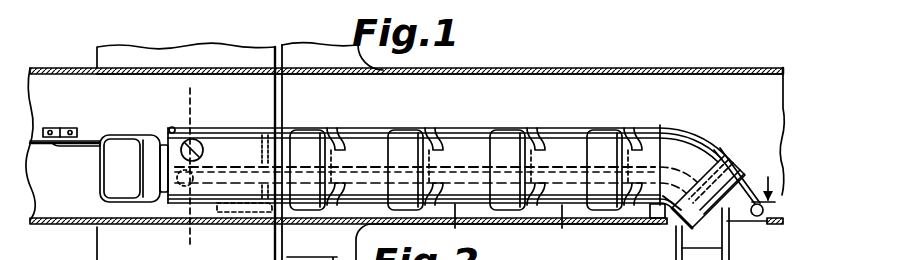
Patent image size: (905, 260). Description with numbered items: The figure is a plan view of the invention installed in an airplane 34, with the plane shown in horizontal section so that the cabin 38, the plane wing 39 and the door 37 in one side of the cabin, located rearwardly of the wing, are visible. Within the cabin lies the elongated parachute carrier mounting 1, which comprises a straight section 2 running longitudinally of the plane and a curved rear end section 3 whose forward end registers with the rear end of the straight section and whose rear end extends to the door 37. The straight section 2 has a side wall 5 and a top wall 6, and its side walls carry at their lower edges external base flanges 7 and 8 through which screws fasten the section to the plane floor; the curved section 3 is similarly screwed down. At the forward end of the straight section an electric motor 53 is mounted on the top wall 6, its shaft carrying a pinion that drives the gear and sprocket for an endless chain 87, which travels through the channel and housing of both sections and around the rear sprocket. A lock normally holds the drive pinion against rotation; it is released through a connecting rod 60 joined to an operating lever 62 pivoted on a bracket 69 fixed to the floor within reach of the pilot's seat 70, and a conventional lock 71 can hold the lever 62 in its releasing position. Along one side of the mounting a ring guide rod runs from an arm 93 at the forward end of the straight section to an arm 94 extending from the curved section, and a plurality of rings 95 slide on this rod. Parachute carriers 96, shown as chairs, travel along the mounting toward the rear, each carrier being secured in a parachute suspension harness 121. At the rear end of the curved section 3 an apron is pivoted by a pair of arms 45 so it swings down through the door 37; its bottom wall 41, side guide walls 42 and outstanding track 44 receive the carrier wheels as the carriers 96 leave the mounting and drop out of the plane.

The parachute carrier mounting 1 is at (360, 136).
The straight section 2 is at (456, 146).
The curved rear end section 3 is at (700, 139).
The side wall 5 is at (188, 98).
The top wall 6 is at (654, 178).
The external base flange 7 is at (483, 129).
The external base flange 8 is at (479, 196).
The airplane 34 is at (594, 66).
The door 37 is at (660, 219).
The cabin 38 is at (497, 68).
The plane wing 39 is at (110, 52).
The bottom wall 41 is at (704, 240).
The side guide walls 42 is at (735, 249).
The track 44 is at (677, 236).
The arms 45 is at (754, 202).
The electric motor 53 is at (198, 146).
The connecting rod 60 is at (90, 148).
The operating lever 62 is at (55, 148).
The bracket 69 is at (68, 128).
The pilot's seat 70 is at (134, 168).
The conventional lock 71 is at (57, 128).
The endless chain 87 is at (238, 168).
The arm 93 is at (169, 130).
The arm 94 is at (740, 221).
The rings 95 is at (345, 127).
The parachute carriers 96 is at (515, 160).
The parachute suspension harness 121 is at (680, 115).